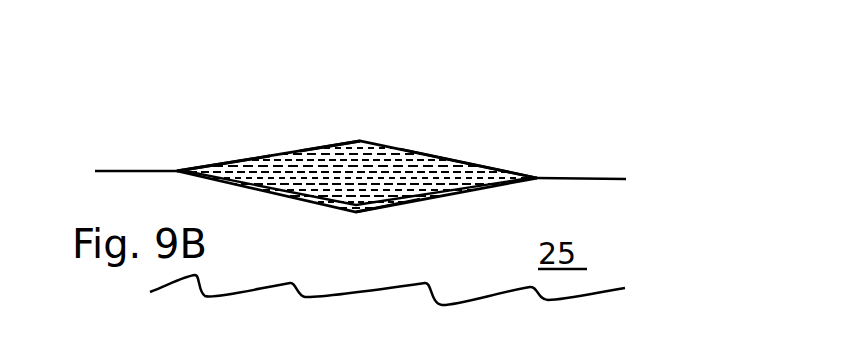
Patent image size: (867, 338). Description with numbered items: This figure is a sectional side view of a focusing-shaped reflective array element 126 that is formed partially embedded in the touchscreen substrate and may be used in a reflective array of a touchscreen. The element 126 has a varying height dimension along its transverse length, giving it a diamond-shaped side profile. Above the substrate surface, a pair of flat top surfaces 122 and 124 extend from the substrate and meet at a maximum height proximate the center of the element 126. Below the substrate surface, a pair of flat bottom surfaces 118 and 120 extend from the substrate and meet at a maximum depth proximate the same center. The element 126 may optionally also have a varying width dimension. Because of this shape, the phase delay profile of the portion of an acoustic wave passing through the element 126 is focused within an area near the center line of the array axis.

The flat bottom surface 118 is at (280, 200).
The flat bottom surface 120 is at (413, 204).
The flat top surface 122 is at (267, 150).
The flat top surface 124 is at (437, 151).
The focusing-shaped reflective array element 126 is at (313, 143).